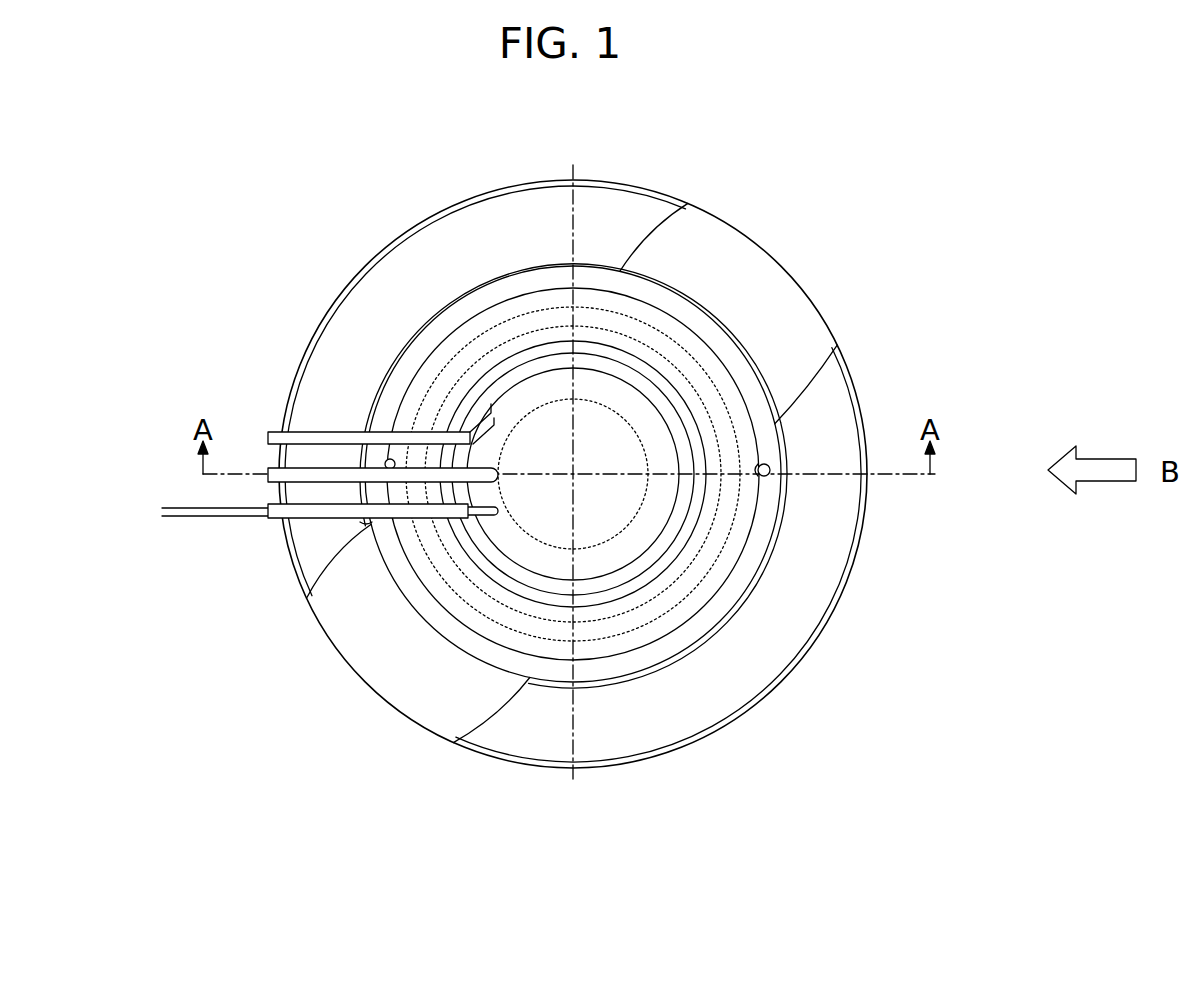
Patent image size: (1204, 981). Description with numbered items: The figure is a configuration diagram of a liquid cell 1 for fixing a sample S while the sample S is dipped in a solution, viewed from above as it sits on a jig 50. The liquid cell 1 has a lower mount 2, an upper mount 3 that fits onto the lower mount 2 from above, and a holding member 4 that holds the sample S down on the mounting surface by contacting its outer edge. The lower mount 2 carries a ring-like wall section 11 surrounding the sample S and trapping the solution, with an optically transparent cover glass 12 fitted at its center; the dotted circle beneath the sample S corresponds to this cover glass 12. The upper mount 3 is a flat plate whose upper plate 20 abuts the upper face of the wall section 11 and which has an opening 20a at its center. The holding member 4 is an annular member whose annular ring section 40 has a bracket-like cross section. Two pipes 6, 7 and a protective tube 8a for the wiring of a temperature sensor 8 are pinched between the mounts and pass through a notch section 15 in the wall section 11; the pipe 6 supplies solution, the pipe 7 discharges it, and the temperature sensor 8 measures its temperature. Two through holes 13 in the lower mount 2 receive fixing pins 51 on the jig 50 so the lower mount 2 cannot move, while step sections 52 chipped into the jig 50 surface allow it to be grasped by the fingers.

The liquid cell 1 is at (841, 176).
The lower mount 2 is at (751, 338).
The upper mount 3 is at (703, 324).
The holding member 4 is at (651, 365).
The pipe 6 is at (277, 428).
The pipe 7 is at (310, 438).
The temperature sensor 8 is at (485, 515).
The protective tube 8a is at (300, 515).
The wall section 11 is at (553, 322).
The cover glass 12 is at (612, 520).
The through holes 13 is at (387, 461).
The notch section 15 is at (380, 425).
The upper plate 20 is at (510, 313).
The opening 20a is at (498, 358).
The annular ring section 40 is at (597, 603).
The jig 50 is at (631, 178).
The fixing pins 51 is at (769, 464).
The step sections 52 is at (822, 380).
The sample S is at (620, 553).